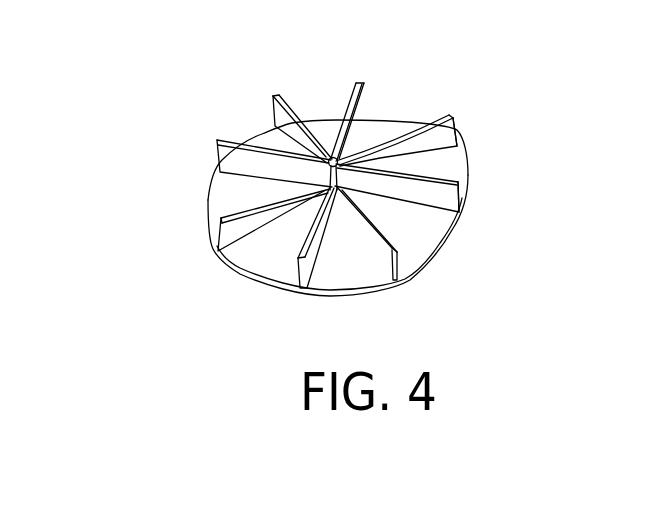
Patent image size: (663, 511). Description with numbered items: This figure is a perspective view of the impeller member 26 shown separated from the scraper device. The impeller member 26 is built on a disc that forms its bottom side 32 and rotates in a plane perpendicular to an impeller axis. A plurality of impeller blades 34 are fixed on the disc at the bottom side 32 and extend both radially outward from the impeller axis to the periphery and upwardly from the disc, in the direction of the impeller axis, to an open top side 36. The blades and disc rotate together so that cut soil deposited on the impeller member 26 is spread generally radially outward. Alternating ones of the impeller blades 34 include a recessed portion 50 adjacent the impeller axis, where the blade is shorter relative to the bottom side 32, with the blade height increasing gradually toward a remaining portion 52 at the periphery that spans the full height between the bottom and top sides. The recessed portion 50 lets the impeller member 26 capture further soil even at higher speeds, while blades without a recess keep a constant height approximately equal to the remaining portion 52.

The impeller member 26 is at (132, 136).
The bottom side 32 is at (240, 283).
The impeller blades 34 is at (455, 130).
The open top side 36 is at (325, 100).
The recessed portion 50 is at (268, 133).
The remaining portion 52 is at (285, 93).